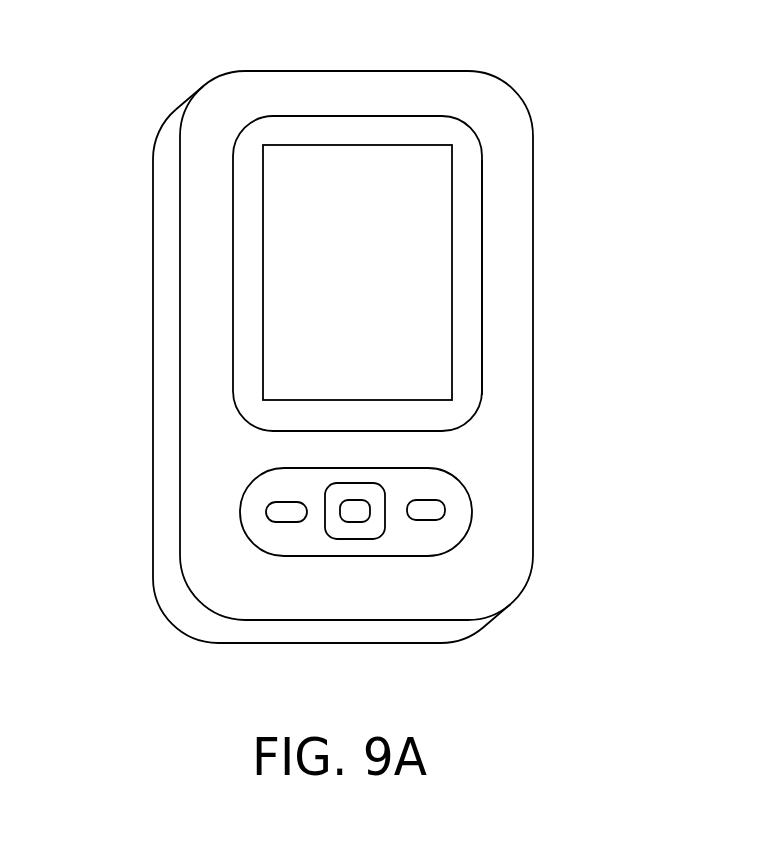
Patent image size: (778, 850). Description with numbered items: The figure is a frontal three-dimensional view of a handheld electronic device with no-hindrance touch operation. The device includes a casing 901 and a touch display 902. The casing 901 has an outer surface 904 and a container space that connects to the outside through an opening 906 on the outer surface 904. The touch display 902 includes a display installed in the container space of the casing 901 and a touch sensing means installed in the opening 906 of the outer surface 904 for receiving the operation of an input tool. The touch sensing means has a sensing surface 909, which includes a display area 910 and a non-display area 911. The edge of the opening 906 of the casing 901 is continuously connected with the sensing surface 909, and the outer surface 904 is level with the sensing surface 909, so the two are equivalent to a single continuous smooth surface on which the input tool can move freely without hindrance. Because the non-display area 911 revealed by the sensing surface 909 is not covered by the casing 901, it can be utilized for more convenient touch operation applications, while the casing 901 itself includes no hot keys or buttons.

The casing 901 is at (517, 517).
The touch display 902 is at (482, 372).
The outer surface 904 is at (202, 482).
The opening 906 is at (482, 232).
The sensing surface 909 is at (465, 162).
The display area 910 is at (383, 175).
The non-display area 911 is at (318, 130).